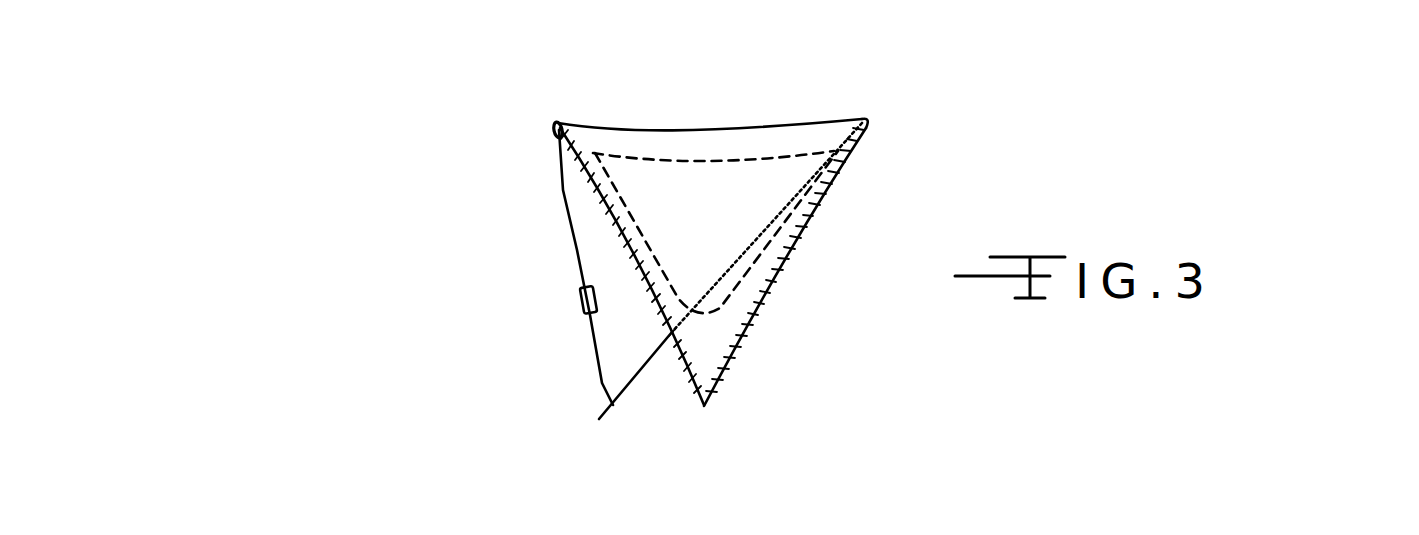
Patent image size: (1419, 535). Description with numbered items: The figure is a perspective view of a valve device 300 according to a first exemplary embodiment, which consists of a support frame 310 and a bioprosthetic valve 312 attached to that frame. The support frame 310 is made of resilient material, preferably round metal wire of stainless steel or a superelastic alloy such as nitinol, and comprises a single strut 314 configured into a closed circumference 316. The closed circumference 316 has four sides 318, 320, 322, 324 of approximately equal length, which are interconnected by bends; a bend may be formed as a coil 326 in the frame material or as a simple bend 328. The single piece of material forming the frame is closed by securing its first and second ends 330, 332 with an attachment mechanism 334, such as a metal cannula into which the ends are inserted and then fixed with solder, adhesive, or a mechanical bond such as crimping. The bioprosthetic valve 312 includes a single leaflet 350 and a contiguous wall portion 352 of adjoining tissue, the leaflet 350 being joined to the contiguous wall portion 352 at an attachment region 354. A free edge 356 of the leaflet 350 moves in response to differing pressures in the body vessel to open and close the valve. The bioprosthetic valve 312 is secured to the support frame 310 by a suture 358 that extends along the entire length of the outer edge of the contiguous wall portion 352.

The valve device 300 is at (880, 163).
The support frame 310 is at (580, 267).
The bioprosthetic valve 312 is at (717, 337).
The strut 314 is at (600, 378).
The closed circumference 316 is at (562, 176).
The side 318 is at (787, 258).
The side 320 is at (652, 295).
The side 322 is at (658, 358).
The side 324 is at (568, 223).
The coil 326 is at (553, 127).
The simple bend 328 is at (599, 419).
The first end 330 is at (583, 286).
The second end 332 is at (588, 327).
The attachment mechanism 334 is at (582, 305).
The leaflet 350 is at (752, 193).
The contiguous wall portion 352 is at (670, 143).
The attachment region 354 is at (797, 208).
The free edge 356 is at (645, 160).
The suture 358 is at (763, 297).